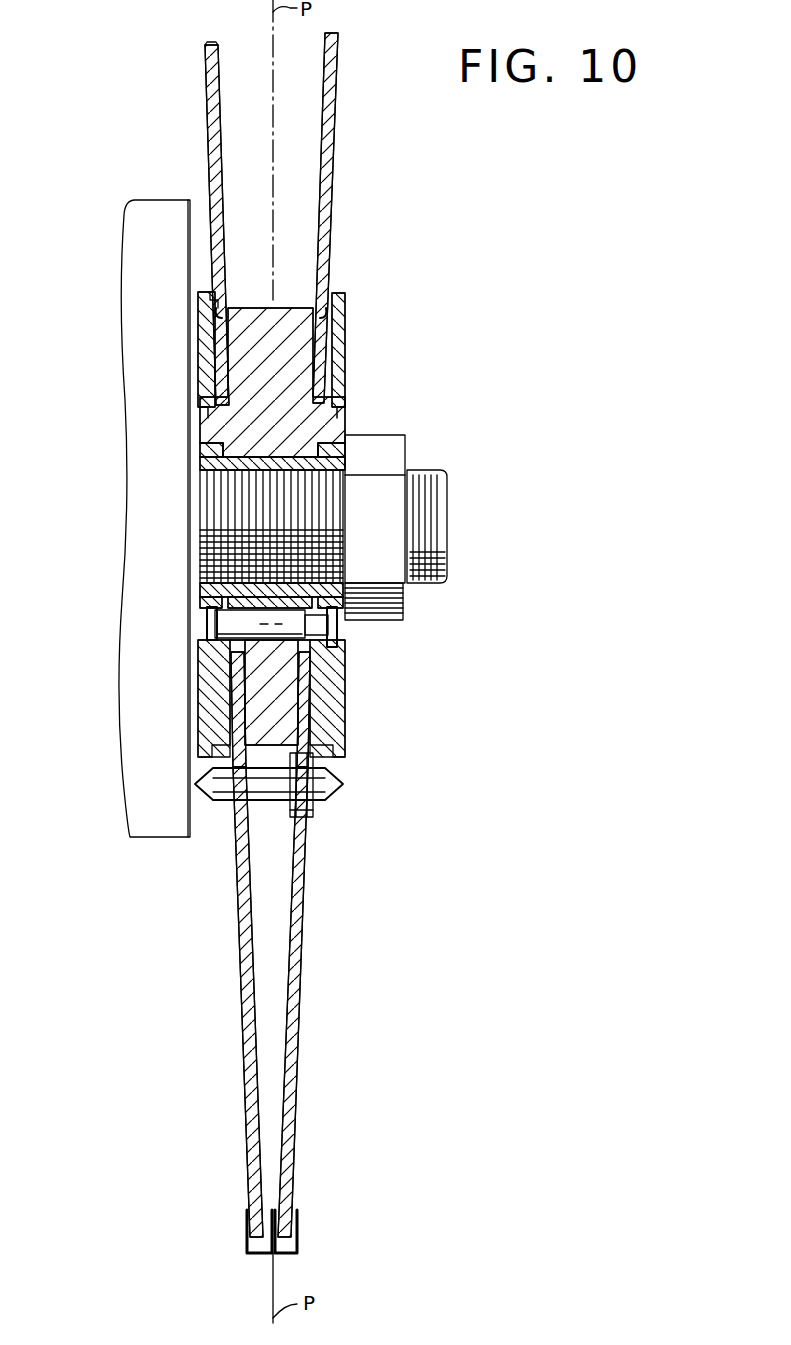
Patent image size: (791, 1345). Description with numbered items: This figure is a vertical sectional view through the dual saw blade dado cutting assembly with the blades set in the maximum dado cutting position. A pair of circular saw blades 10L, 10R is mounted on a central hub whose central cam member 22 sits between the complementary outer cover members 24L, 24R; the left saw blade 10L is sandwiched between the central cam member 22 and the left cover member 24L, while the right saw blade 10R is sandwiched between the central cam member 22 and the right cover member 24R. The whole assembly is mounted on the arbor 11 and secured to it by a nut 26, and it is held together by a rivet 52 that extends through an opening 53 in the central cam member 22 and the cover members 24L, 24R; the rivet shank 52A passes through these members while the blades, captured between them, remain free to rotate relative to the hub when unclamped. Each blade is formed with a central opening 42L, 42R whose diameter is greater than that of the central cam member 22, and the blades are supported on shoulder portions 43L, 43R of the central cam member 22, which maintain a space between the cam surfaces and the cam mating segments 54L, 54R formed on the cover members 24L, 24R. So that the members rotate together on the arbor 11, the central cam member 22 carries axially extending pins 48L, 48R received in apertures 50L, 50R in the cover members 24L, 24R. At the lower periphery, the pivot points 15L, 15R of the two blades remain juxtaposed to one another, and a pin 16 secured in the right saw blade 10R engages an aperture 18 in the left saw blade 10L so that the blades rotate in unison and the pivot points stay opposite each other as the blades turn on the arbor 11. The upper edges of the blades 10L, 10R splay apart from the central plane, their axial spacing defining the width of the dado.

The left saw blade 10L is at (206, 80).
The right saw blade 10R is at (338, 138).
The central cam member 22 is at (287, 300).
The left cover member 24L is at (198, 300).
The right cover member 24R is at (345, 298).
The central opening of left saw blade 42L is at (218, 312).
The central opening of right saw blade 42R is at (338, 312).
The axially extending pin 48L is at (207, 412).
The axially extending pin 48R is at (333, 407).
The aperture 50L is at (200, 437).
The aperture 50R is at (345, 425).
The nut 26 is at (390, 455).
The arbor 11 is at (430, 468).
The rivet 52 is at (337, 622).
The pin shank 52A is at (213, 628).
The opening 53 is at (243, 609).
The shoulder portion 43L is at (243, 660).
The shoulder portion 43R is at (305, 650).
The cam mating segment 54L is at (205, 728).
The cam mating segment 54R is at (345, 722).
The aperture 18 is at (240, 801).
The pin 16 is at (290, 803).
The pivot point 15L is at (265, 1253).
The pivot point 15R is at (274, 1256).